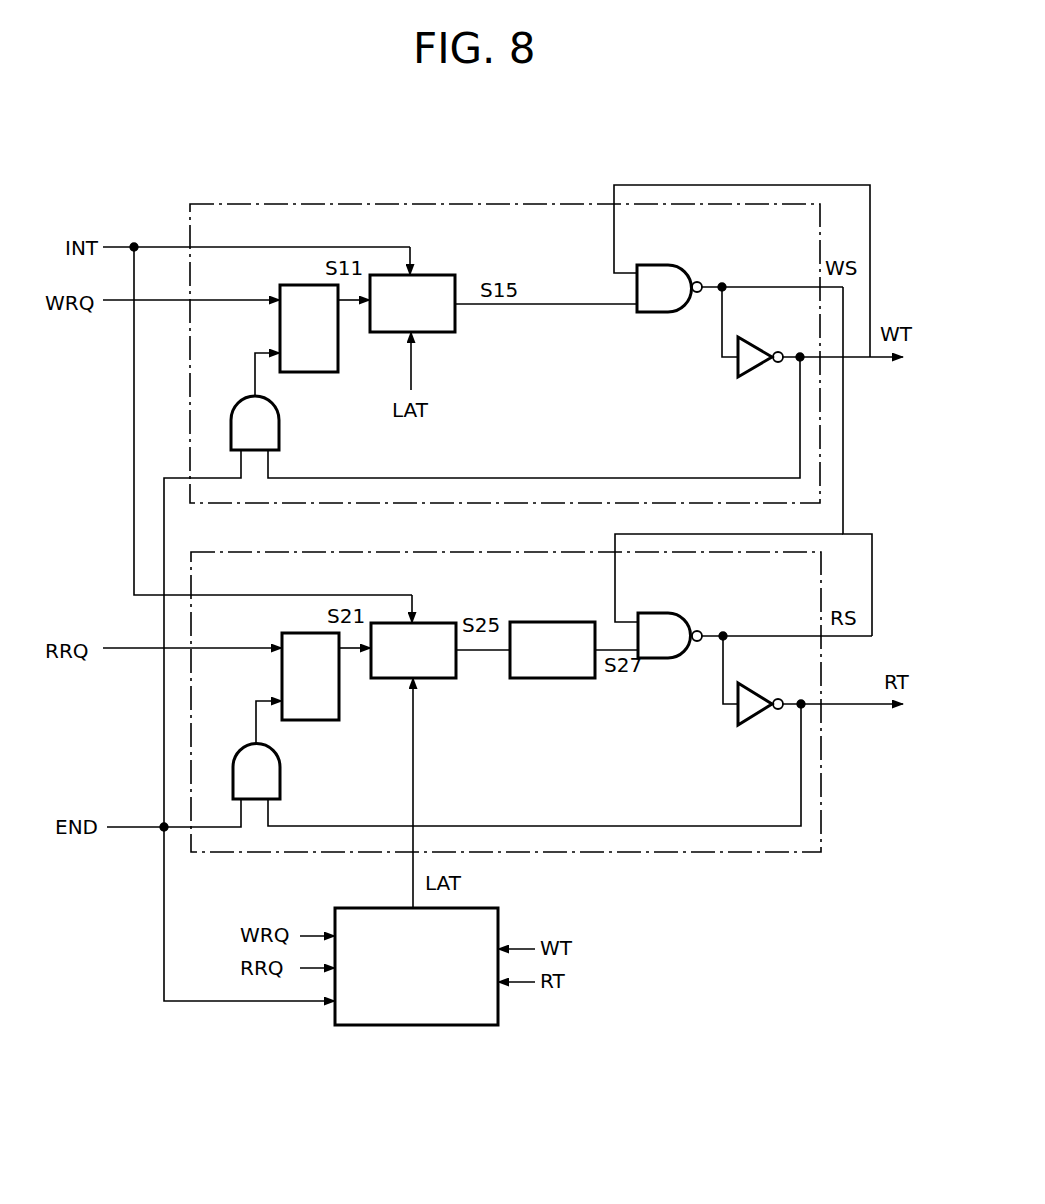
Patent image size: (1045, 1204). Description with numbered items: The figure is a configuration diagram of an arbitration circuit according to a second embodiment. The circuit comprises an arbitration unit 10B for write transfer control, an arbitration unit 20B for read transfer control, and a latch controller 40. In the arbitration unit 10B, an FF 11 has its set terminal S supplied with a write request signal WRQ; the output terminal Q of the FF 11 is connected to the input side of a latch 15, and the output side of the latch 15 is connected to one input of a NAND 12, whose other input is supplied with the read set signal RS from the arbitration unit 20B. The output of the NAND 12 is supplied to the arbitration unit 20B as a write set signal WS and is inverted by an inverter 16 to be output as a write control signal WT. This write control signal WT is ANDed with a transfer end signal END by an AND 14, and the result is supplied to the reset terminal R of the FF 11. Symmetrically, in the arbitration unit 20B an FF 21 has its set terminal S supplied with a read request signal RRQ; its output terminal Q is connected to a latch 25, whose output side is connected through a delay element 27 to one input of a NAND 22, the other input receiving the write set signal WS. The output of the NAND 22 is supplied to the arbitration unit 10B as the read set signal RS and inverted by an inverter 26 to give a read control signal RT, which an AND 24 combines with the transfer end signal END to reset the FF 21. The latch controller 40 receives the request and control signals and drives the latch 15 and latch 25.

The arbitration unit 10B is at (328, 205).
The arbitration unit 20B is at (329, 553).
The FF 11 is at (320, 373).
The NAND 12 is at (660, 313).
The AND 14 is at (280, 436).
The latch 15 is at (430, 333).
The inverter 16 is at (752, 373).
The FF 21 is at (320, 721).
The NAND 22 is at (662, 659).
The AND 24 is at (281, 784).
The latch 25 is at (440, 679).
The inverter 26 is at (752, 721).
The delay element 27 is at (553, 679).
The latch controller 40 is at (499, 911).